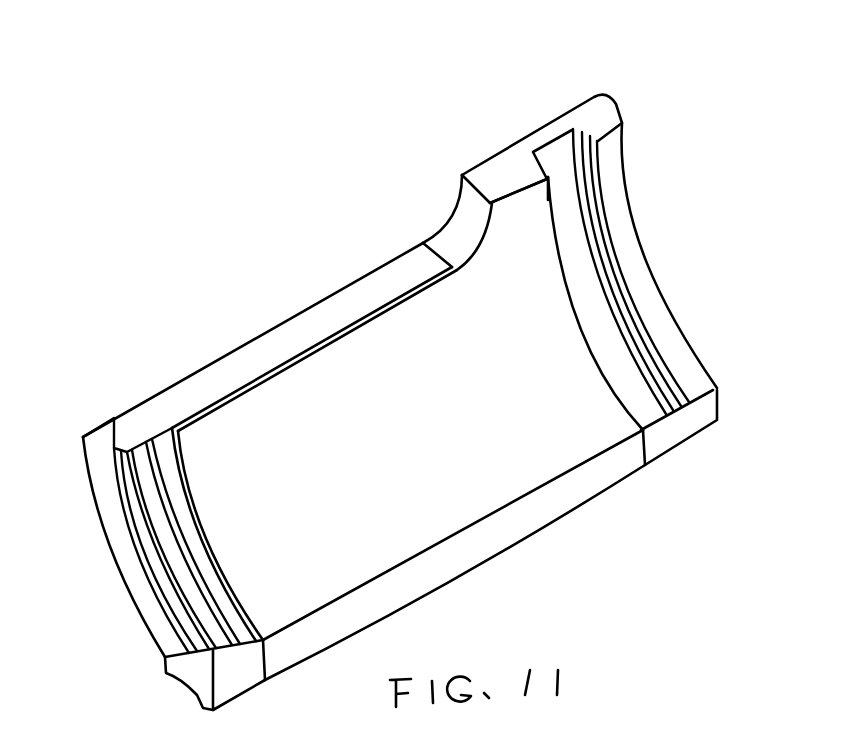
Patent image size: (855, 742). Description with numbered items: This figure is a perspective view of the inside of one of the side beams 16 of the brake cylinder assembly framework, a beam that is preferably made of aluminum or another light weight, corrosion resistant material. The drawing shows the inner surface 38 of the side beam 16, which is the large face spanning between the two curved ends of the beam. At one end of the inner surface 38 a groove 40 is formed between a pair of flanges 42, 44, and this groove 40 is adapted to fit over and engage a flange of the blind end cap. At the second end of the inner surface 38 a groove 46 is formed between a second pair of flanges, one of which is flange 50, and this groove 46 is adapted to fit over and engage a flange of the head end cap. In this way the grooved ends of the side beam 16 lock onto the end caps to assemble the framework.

The side beam 16 is at (643, 238).
The inner surface 38 is at (437, 430).
The groove 40 is at (560, 154).
The flange 42 is at (611, 152).
The flange 44 is at (558, 225).
The groove 46 is at (137, 443).
The flange 50 is at (155, 440).